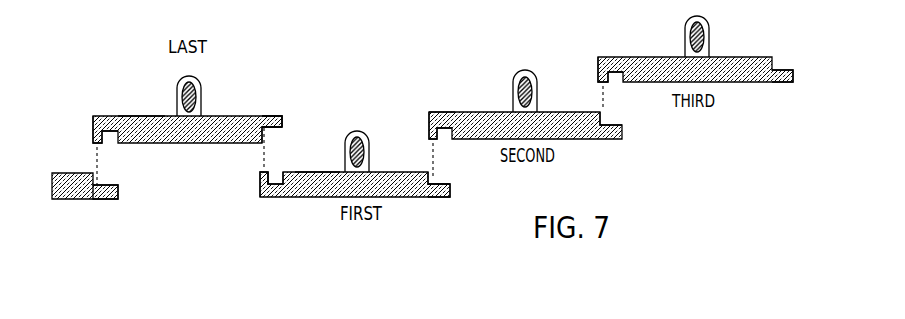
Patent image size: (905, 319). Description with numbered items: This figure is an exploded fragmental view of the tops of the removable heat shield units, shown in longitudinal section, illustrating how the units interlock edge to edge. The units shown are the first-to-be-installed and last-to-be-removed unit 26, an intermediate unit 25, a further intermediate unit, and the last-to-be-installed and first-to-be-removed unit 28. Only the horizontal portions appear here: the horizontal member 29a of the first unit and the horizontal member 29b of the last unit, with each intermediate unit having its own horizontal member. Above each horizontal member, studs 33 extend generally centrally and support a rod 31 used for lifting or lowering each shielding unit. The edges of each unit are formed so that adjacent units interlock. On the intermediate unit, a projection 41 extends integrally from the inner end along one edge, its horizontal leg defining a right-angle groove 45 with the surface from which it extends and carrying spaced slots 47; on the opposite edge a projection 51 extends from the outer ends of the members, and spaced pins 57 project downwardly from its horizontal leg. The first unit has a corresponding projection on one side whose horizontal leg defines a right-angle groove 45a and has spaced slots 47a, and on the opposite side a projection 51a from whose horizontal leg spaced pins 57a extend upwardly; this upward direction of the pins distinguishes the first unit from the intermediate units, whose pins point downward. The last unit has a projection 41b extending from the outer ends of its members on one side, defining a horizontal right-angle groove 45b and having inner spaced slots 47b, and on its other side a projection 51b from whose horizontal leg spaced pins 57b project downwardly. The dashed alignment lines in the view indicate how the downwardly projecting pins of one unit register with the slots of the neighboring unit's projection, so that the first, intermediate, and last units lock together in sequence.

The intermediate unit 25 is at (624, 145).
The first-to-be installed and last-to-be-removed unit 26 is at (299, 202).
The last-to-be-installed and first-to-be-removed unit 28 is at (188, 146).
The horizontal member 29a is at (320, 170).
The horizontal member 29b is at (132, 116).
The rod 31 is at (199, 79).
The stud 33 is at (179, 79).
The projection 41 is at (119, 203).
The projection 41b is at (276, 107).
The right-angle groove 45 is at (602, 125).
The right-angle groove 45a is at (430, 180).
The horizontal right-angle groove 45b is at (262, 130).
The slot 47 is at (98, 199).
The slot 47a is at (436, 198).
The slot 47b is at (264, 116).
The projection 51 is at (432, 112).
The projection 51a is at (277, 173).
The projection 51b is at (93, 114).
The pin 57 is at (432, 140).
The pin 57a is at (262, 174).
The pin 57b is at (93, 140).